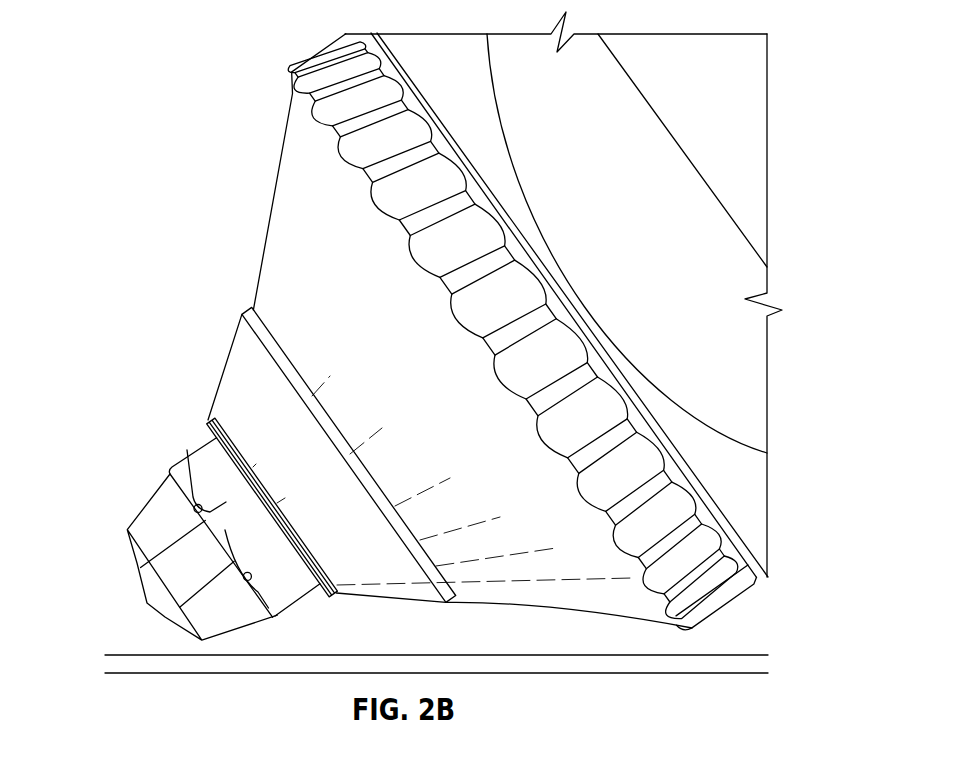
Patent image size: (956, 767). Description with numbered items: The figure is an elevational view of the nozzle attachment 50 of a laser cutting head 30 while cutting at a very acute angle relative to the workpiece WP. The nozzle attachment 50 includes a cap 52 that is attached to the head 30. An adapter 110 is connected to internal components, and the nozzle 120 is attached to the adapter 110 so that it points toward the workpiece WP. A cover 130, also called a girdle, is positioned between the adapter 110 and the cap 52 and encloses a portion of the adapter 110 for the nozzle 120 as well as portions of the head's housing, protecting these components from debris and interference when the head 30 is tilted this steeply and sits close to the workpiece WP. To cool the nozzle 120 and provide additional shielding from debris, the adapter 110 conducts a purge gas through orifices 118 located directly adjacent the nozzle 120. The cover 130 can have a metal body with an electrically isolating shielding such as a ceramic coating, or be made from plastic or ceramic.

The nozzle attachment 50 is at (143, 35).
The head 30 is at (748, 135).
The cap 52 is at (268, 208).
The cover 130 is at (232, 328).
The adapter 110 is at (192, 453).
The nozzle 120 is at (155, 512).
The orifices 118 is at (302, 551).
The workpiece WP is at (160, 653).